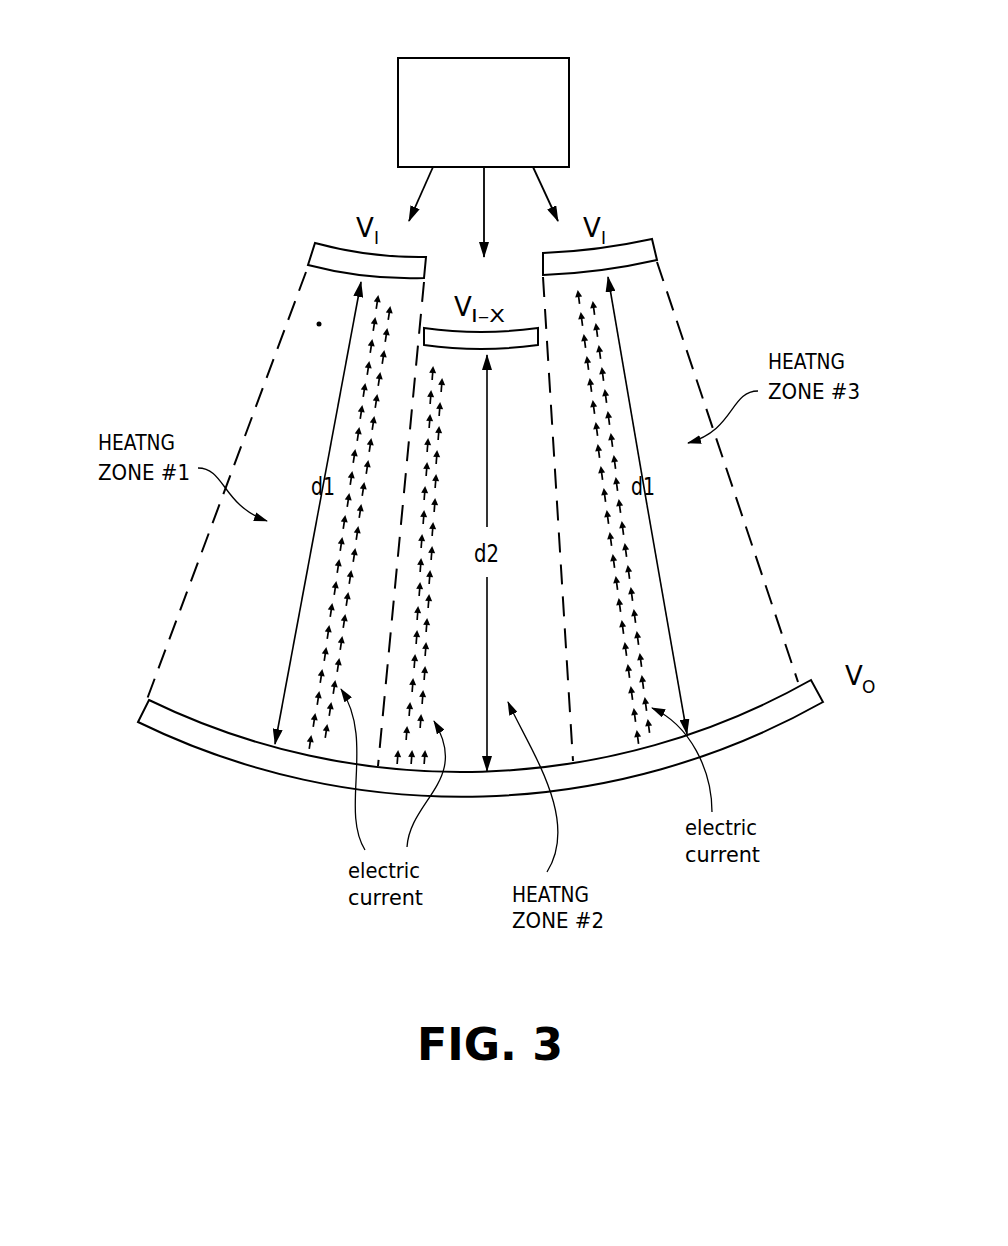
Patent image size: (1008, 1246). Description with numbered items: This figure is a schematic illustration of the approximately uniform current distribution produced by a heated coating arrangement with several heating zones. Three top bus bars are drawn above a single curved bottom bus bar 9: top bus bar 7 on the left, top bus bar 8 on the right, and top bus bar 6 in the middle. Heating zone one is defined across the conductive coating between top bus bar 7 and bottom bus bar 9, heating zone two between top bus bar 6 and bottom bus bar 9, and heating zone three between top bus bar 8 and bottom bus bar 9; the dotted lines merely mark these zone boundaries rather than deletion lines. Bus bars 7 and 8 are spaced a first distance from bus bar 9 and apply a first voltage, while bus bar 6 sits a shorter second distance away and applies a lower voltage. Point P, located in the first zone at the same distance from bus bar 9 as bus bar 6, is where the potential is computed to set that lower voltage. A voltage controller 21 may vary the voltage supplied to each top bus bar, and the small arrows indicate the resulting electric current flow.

The voltage controller 21 is at (527, 67).
The top bus bar 7 is at (340, 255).
The top bus bar 8 is at (645, 250).
The top bus bar 6 is at (447, 335).
The bottom bus bar 9 is at (765, 717).
The point P is at (312, 323).